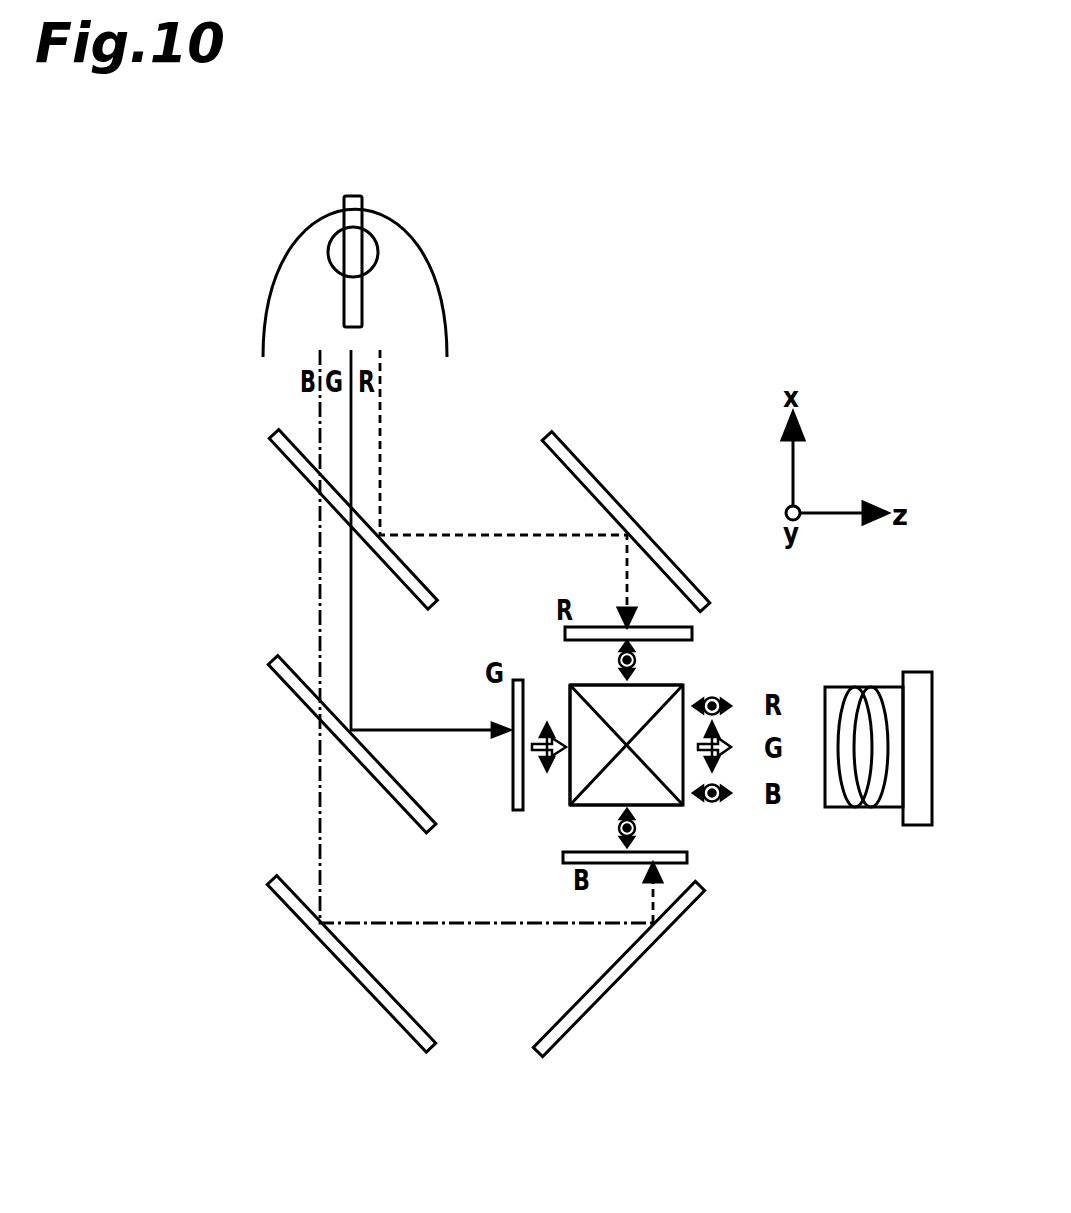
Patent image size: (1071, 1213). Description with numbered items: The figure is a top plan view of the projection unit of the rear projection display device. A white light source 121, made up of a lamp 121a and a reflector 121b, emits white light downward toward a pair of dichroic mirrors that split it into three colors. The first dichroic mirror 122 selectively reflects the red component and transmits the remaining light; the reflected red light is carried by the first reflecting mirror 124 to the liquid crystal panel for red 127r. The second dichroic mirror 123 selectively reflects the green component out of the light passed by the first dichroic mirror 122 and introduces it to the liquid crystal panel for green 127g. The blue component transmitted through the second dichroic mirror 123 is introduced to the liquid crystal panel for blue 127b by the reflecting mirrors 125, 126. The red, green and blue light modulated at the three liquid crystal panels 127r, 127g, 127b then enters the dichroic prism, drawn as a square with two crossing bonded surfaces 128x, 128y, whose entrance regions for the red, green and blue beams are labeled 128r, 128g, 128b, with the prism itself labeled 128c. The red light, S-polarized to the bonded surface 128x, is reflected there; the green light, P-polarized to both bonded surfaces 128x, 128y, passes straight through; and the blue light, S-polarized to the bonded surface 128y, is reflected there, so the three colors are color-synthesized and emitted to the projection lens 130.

The white light source 121 is at (382, 208).
The lamp 121a is at (327, 253).
The reflector 121b is at (418, 250).
The first dichroic mirror 122 is at (302, 470).
The second dichroic mirror 123 is at (300, 688).
The first reflecting mirror 124 is at (580, 477).
The reflecting mirror 125 is at (330, 948).
The reflecting mirror 126 is at (600, 988).
The liquid crystal panel for red 127r is at (600, 627).
The liquid crystal panel for green 127g is at (512, 797).
The liquid crystal panel for blue 127b is at (597, 865).
The red light incident surface 128r is at (575, 686).
The green light incident surface 128g is at (570, 723).
The blue light incident surface 128b is at (580, 808).
The cross dichroic prism 128c is at (608, 766).
The bonded surface 128x is at (683, 806).
The bonded surface 128y is at (617, 763).
The projection lens 130 is at (868, 688).